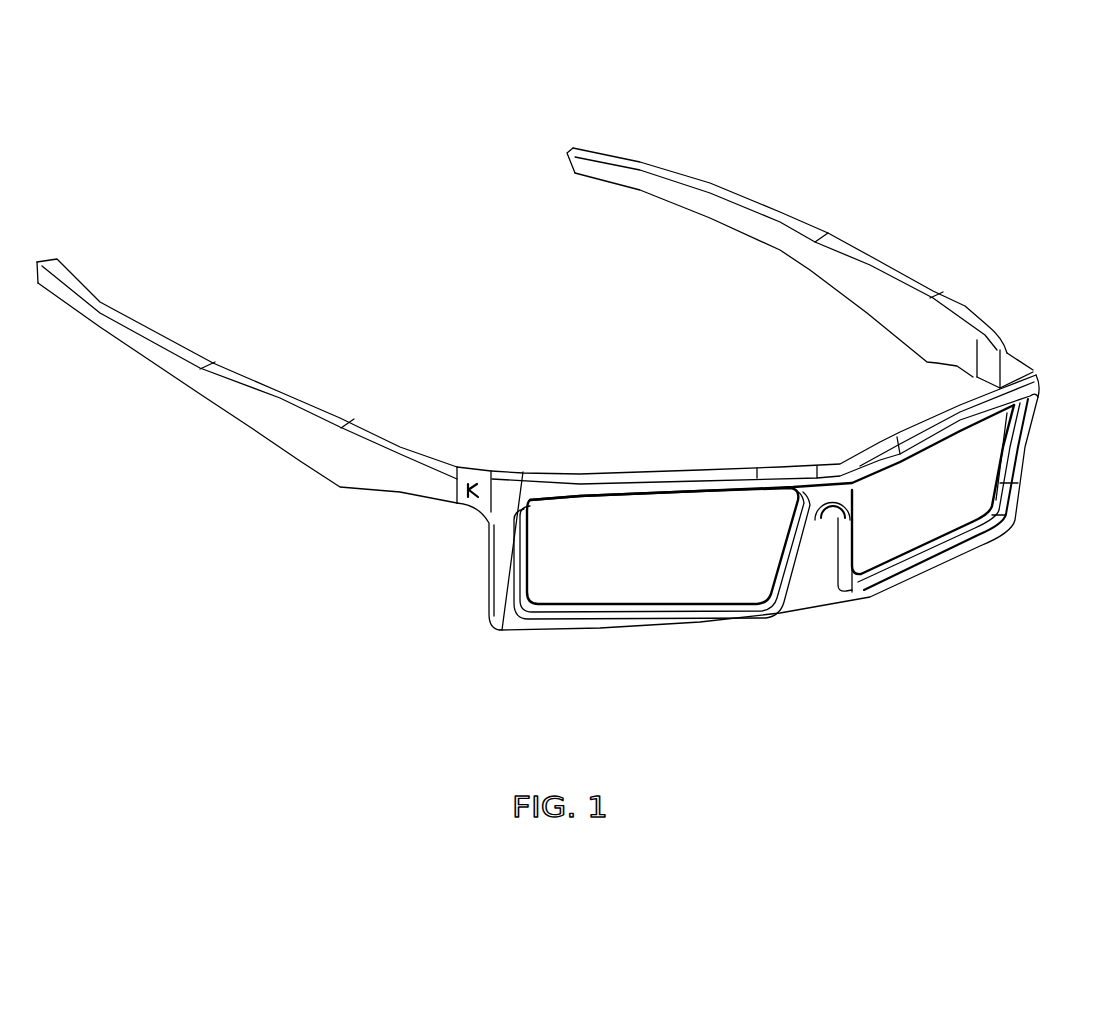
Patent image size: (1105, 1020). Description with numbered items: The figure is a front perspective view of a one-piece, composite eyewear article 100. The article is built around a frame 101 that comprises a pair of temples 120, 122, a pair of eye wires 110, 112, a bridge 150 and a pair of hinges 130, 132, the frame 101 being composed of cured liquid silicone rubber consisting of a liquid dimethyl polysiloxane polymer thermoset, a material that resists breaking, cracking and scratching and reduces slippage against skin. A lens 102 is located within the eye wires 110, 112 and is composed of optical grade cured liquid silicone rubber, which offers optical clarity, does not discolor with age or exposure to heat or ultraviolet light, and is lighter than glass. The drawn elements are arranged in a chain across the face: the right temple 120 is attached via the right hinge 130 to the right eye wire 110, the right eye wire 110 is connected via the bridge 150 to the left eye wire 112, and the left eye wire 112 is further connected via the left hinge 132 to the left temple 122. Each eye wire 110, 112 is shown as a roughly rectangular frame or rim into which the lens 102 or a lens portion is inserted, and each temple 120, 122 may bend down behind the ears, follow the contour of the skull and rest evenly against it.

The one-piece, composite eyewear article 100 is at (530, 96).
The frame 101 is at (717, 462).
The lens 102 is at (692, 588).
The right eye wire 110 is at (607, 473).
The left eye wire 112 is at (980, 555).
The right temple 120 is at (162, 328).
The left temple 122 is at (744, 197).
The right hinge 130 is at (460, 467).
The left hinge 132 is at (1012, 348).
The bridge 150 is at (825, 462).